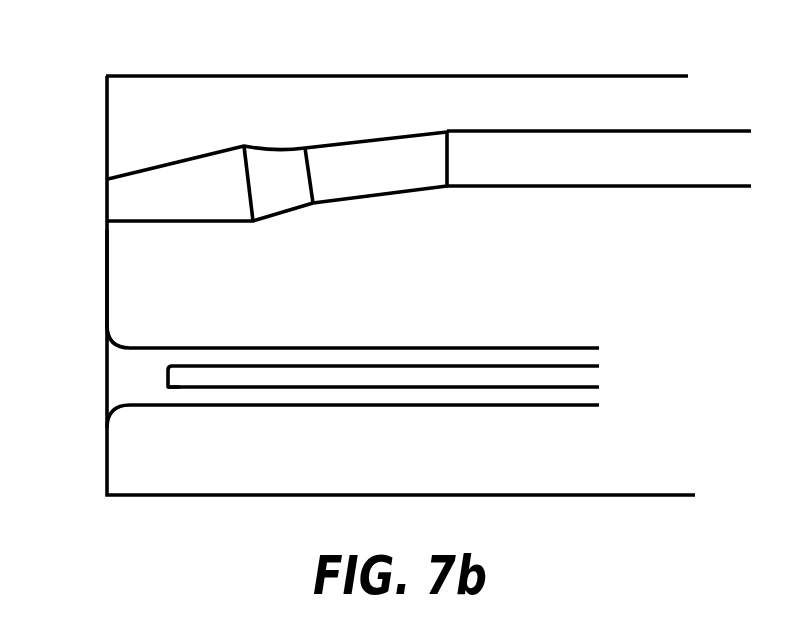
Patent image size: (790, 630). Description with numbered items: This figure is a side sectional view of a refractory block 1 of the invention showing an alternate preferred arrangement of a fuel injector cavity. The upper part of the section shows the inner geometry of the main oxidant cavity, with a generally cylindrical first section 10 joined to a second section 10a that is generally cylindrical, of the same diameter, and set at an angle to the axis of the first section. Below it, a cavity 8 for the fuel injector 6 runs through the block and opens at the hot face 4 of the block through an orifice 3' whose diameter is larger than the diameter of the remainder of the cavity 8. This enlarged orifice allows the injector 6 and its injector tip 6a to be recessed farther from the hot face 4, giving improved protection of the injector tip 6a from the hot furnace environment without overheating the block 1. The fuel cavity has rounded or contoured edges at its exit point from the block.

The block 1 is at (211, 103).
The first section 10 is at (513, 130).
The second section 10a is at (402, 193).
The hot face 4 is at (107, 262).
The orifice 3' is at (85, 329).
The cavity 8 is at (355, 358).
The injector 6 is at (337, 388).
The injector tip 6a is at (172, 386).